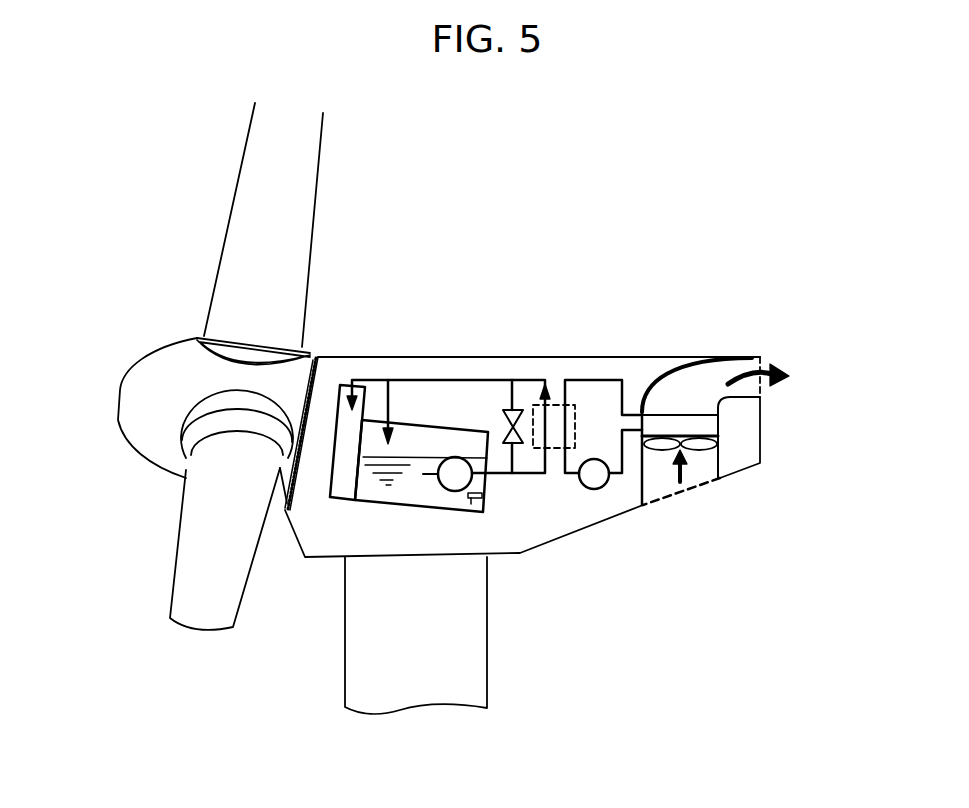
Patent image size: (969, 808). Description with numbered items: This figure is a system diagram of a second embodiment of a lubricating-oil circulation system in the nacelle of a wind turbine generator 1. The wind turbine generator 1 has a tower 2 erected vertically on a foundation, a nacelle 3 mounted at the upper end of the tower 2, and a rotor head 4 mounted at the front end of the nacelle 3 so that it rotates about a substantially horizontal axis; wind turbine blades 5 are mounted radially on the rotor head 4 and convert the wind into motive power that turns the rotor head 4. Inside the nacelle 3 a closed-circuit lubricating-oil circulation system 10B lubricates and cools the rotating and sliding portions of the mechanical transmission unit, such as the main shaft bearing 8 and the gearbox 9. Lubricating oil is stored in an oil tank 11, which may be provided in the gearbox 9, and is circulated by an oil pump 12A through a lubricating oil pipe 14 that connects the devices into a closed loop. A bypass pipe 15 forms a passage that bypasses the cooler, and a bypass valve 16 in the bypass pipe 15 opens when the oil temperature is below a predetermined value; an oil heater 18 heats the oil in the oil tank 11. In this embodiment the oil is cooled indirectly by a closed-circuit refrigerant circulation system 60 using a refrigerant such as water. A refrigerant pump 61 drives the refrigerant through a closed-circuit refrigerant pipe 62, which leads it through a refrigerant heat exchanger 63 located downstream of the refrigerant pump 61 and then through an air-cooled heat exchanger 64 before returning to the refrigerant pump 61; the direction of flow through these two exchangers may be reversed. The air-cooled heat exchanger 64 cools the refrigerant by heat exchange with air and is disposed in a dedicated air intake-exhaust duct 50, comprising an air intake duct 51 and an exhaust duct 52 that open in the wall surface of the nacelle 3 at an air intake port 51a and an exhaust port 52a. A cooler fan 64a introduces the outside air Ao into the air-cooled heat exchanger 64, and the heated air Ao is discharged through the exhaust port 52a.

The wind turbine generator 1 is at (684, 193).
The wind turbine tower 2 is at (487, 676).
The nacelle 3 is at (548, 560).
The rotor head 4 is at (118, 420).
The wind turbine blade 5 is at (318, 165).
The main shaft bearing 8 is at (340, 498).
The gearbox 9 is at (404, 420).
The lubricating-oil circulation system 10B is at (486, 355).
The oil tank 11 is at (417, 502).
The oil pump 12A is at (460, 493).
The lubricating oil pipe 14 is at (445, 380).
The bypass pipe 15 is at (512, 395).
The bypass valve 16 is at (514, 447).
The oil heater 18 is at (482, 505).
The air intake-exhaust duct 50 is at (662, 365).
The air intake duct 51 is at (642, 483).
The air intake port 51a is at (695, 490).
The exhaust duct 52 is at (680, 364).
The exhaust port 52a is at (762, 357).
The refrigerant circulation system 60 is at (602, 357).
The refrigerant pump 61 is at (594, 490).
The refrigerant pipe 62 is at (580, 380).
The refrigerant heat exchanger 63 is at (553, 405).
The air-cooled heat exchanger 64 is at (720, 423).
The cooler fan 64a is at (718, 443).
The outside air flow Ao is at (737, 372).